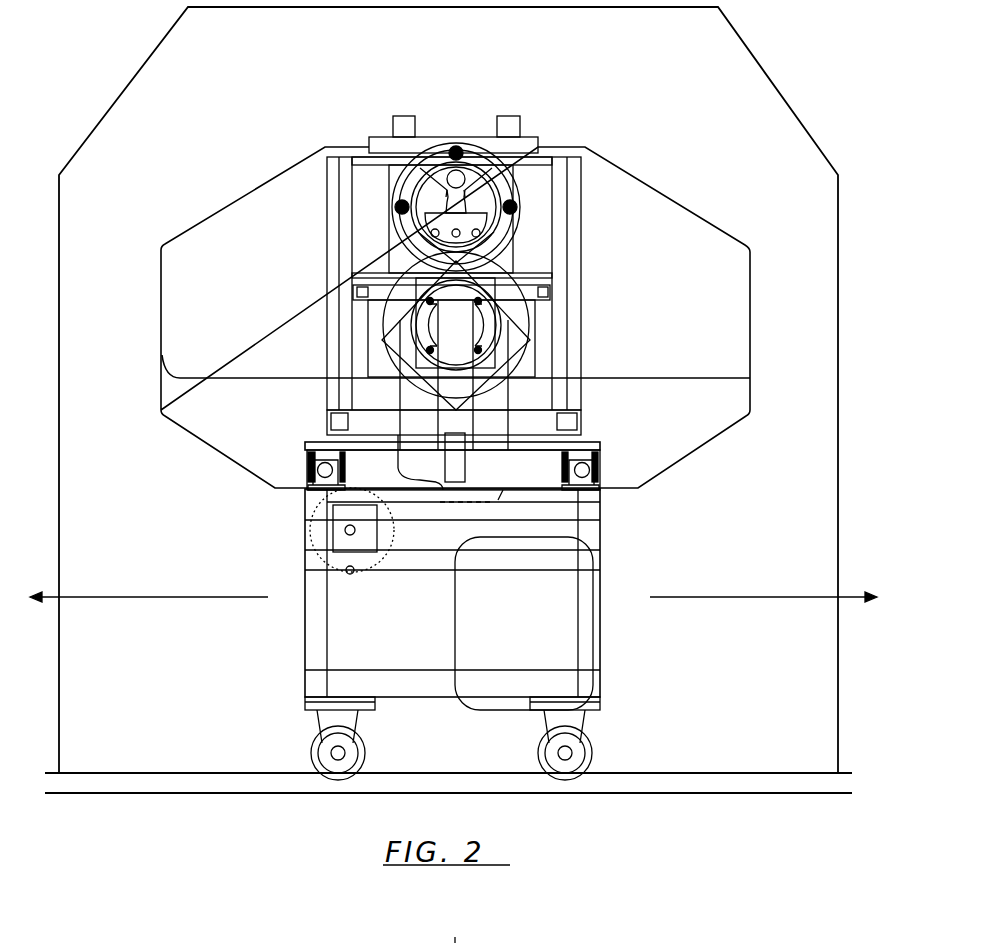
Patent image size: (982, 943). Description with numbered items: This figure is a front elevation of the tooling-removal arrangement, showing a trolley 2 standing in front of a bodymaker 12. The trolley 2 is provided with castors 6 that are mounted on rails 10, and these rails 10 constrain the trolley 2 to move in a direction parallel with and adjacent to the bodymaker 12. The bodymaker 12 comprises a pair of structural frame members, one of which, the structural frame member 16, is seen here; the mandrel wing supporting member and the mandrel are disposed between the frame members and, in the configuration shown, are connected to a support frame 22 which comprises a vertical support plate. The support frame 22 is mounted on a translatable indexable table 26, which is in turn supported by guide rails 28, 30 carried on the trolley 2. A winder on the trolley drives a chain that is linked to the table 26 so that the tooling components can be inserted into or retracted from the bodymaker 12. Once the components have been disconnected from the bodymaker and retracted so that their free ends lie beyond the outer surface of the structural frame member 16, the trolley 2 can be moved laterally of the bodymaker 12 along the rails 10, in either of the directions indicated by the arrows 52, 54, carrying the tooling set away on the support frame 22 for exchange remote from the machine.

The trolley 2 is at (305, 627).
The castor 6 is at (323, 760).
The rail 10 is at (347, 782).
The bodymaker 12 is at (118, 96).
The structural frame member 16 is at (742, 249).
The support frame 22 is at (325, 278).
The translatable indexable table 26 is at (602, 445).
The guide rail 28 is at (307, 470).
The guide rail 30 is at (602, 470).
The arrow 52 is at (139, 597).
The arrow 54 is at (767, 598).